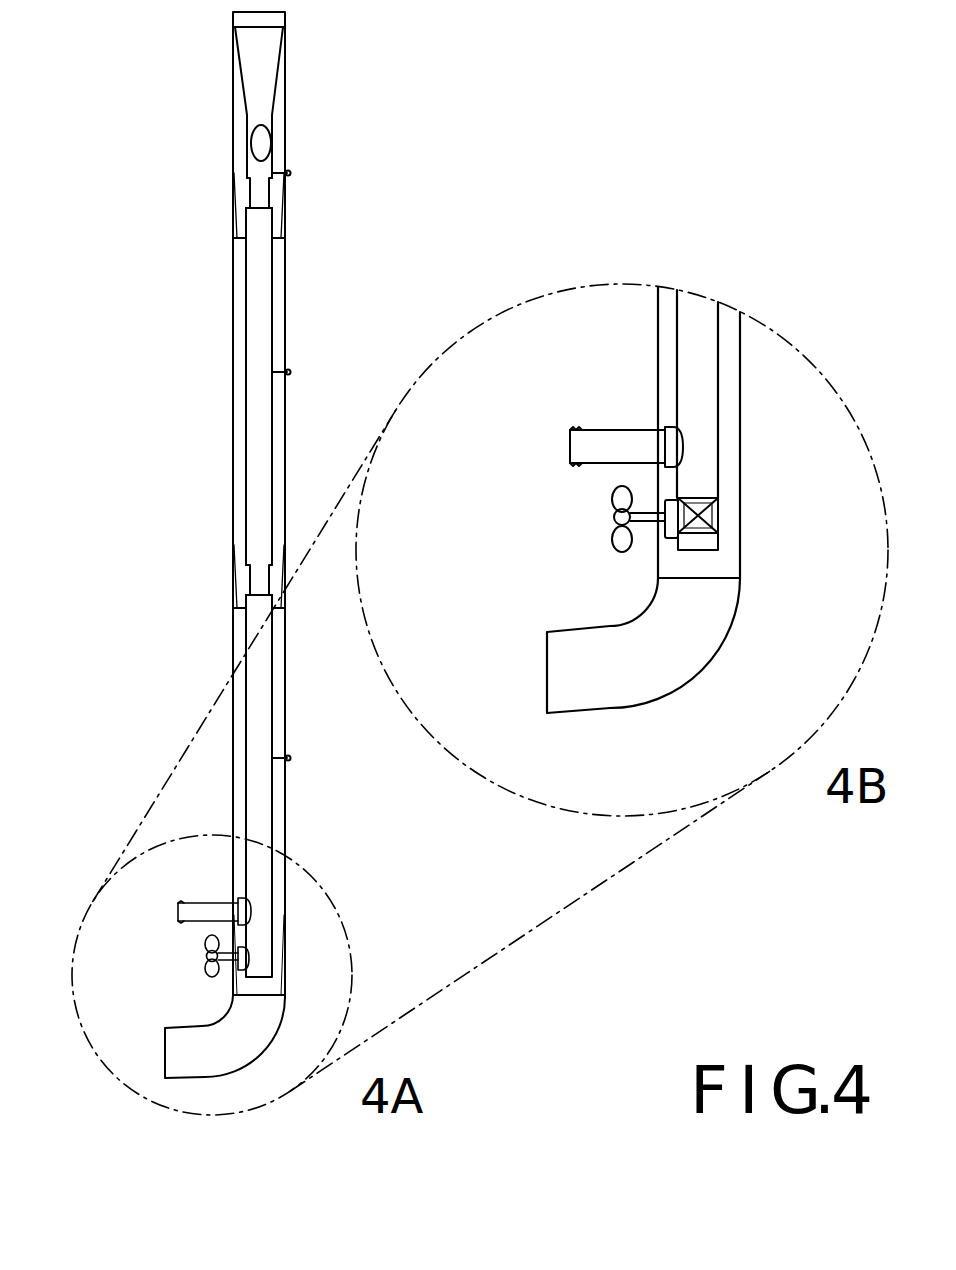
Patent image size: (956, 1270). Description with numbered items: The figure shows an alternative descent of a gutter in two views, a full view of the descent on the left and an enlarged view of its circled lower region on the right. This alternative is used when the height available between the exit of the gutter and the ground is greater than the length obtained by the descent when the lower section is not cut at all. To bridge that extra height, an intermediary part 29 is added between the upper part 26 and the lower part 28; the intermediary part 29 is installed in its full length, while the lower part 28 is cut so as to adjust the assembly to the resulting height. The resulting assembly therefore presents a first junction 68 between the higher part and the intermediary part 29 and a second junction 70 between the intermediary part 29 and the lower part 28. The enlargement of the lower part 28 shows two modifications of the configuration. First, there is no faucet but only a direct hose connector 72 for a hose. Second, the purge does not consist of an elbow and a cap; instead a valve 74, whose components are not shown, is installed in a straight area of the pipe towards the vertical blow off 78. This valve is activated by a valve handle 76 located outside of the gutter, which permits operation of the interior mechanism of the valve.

The upper part 26 is at (233, 110).
The first junction 68 is at (262, 193).
The intermediary part 29 is at (238, 333).
The second junction 70 is at (260, 582).
The lower part 28 is at (232, 743).
The direct hose connector 72 is at (623, 455).
The valve handle 74 is at (712, 510).
The valve handle 76 is at (614, 536).
The vertical blow off 78 is at (703, 553).